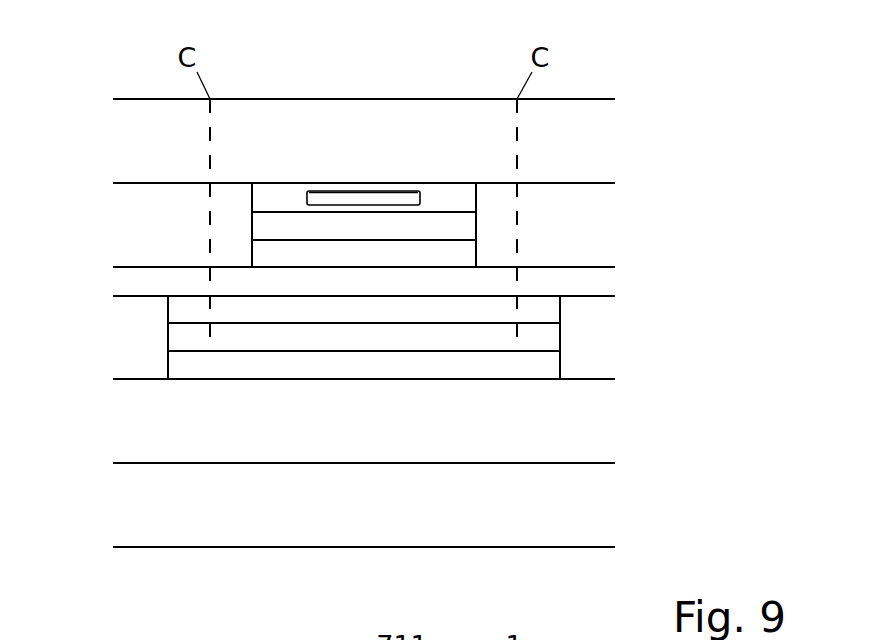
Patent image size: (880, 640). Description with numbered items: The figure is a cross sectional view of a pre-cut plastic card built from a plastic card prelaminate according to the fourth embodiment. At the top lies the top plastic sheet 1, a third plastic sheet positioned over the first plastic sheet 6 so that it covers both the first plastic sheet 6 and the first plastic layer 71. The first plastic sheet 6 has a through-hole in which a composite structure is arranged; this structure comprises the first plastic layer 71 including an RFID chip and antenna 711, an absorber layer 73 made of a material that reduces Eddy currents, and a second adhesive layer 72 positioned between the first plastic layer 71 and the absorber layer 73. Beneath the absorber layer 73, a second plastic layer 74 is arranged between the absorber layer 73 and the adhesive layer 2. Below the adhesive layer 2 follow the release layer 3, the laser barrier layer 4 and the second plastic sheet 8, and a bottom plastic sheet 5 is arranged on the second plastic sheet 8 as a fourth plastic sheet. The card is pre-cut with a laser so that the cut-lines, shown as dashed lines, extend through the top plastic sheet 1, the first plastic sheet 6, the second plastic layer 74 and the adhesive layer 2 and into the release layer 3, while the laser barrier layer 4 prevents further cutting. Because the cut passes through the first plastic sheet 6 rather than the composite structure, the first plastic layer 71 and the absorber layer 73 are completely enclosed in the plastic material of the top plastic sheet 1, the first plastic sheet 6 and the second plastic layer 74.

The top plastic sheet 1 is at (600, 140).
The adhesive layer 2 is at (553, 312).
The release layer 3 is at (552, 338).
The laser barrier layer 4 is at (552, 365).
The bottom plastic sheet 5 is at (598, 505).
The first plastic sheet 6 is at (607, 231).
The second plastic sheet 8 is at (588, 418).
The first plastic layer 71 is at (268, 192).
The RFID chip and antenna 711 is at (365, 185).
The second adhesive layer 72 is at (433, 222).
The absorber layer 73 is at (447, 250).
The second plastic layer 74 is at (223, 282).